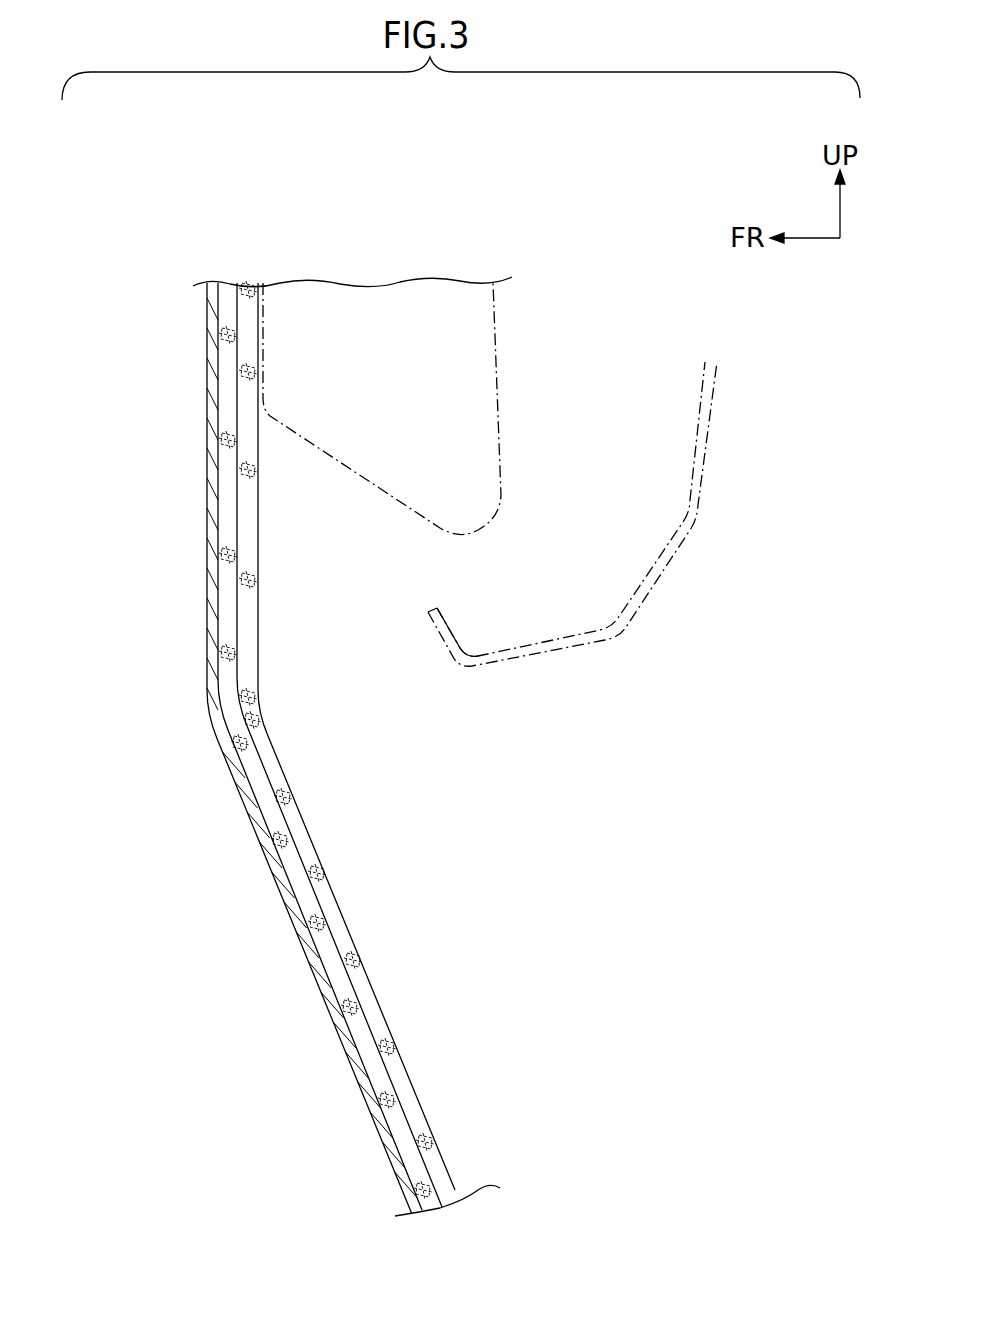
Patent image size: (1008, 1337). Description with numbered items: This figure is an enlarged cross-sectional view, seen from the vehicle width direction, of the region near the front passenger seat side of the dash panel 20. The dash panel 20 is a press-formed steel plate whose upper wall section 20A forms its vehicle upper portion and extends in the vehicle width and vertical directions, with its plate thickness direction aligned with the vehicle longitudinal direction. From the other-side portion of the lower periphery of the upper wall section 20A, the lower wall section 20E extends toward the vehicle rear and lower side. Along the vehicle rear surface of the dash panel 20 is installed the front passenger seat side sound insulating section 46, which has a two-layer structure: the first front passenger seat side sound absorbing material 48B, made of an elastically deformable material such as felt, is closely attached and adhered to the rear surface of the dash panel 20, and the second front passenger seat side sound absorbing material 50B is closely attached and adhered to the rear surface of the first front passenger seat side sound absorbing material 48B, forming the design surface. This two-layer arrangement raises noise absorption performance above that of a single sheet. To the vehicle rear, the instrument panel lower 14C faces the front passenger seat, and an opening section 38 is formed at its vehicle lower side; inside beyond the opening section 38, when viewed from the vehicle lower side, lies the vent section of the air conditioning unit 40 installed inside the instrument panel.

The dash panel 20 is at (247, 748).
The upper wall section 20A is at (207, 362).
The lower wall section 20E is at (296, 908).
The opening section 38 is at (432, 627).
The air conditioning unit 40 is at (497, 345).
The instrument panel lower 14C is at (550, 525).
The front passenger seat side sound insulating section 46 is at (384, 744).
The first front passenger seat side sound absorbing material 48B is at (380, 1076).
The second front passenger seat side sound absorbing material 50B is at (385, 1022).